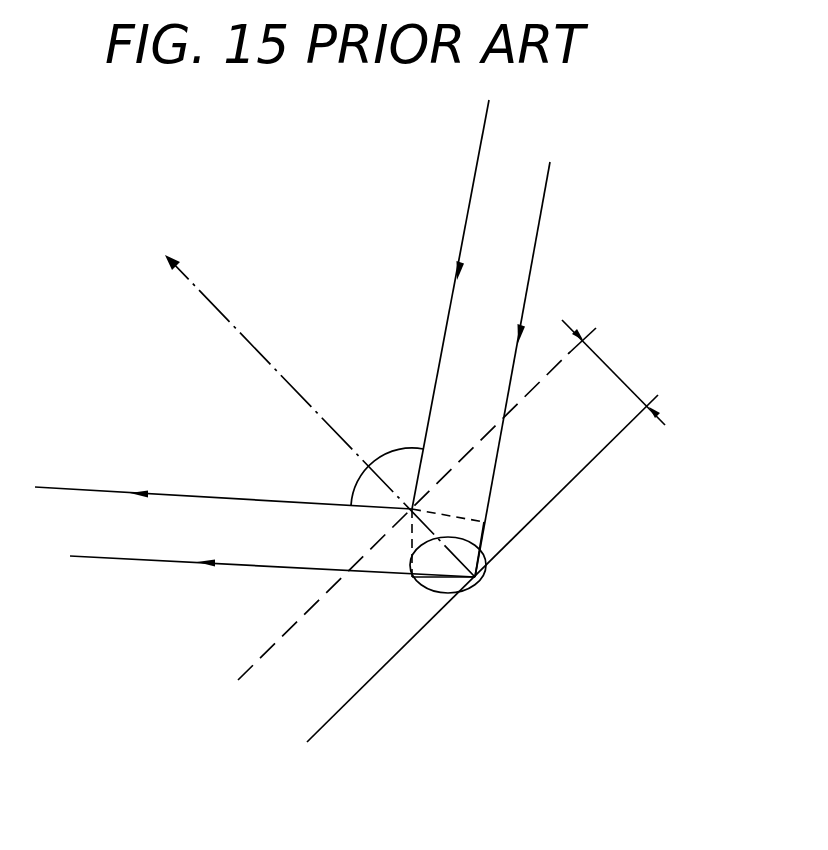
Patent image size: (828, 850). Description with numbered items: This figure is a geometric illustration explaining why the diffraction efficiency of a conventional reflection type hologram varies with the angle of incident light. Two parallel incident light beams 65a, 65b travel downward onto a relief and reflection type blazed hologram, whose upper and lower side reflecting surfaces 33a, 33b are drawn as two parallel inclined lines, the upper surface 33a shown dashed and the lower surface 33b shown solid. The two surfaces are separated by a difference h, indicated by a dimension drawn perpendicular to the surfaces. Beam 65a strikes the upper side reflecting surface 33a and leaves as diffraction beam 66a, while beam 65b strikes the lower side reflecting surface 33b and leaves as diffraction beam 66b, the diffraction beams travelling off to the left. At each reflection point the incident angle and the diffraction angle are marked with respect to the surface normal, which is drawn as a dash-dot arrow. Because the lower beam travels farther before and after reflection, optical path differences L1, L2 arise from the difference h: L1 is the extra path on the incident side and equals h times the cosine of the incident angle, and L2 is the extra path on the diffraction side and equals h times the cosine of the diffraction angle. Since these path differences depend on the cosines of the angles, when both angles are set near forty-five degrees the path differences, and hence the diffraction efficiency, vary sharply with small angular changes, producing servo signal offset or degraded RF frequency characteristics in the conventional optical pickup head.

The incident light beam 65a is at (479, 150).
The incident light beam 65b is at (538, 228).
The diffraction beam 66a is at (223, 484).
The diffraction beam 66b is at (272, 552).
The upper side reflecting surface 33a is at (250, 670).
The lower side reflecting surface 33b is at (342, 710).
The difference between upper and lower side reflecting surfaces h is at (613, 372).
The optical path difference L1 is at (481, 556).
The optical path difference L2 is at (438, 594).